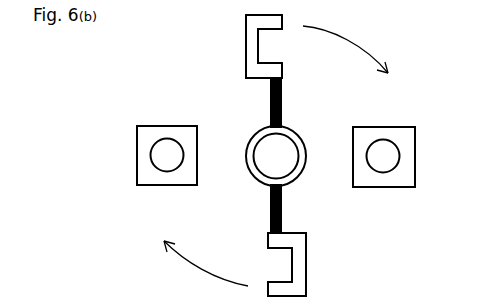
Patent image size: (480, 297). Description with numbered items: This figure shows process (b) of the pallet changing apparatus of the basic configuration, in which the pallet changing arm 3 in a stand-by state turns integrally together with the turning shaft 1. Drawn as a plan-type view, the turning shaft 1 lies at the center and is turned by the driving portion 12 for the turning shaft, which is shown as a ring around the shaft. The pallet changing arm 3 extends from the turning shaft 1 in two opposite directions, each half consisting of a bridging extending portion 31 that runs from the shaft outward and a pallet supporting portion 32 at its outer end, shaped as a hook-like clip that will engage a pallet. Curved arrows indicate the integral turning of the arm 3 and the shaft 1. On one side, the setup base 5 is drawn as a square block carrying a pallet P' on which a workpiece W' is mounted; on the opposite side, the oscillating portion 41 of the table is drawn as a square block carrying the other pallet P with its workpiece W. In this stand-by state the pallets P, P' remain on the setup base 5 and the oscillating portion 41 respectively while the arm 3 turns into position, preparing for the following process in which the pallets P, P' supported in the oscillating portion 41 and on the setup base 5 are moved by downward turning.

The turning shaft 1 is at (280, 147).
The pallet changing arm 3 is at (246, 52).
The setup base 5 is at (121, 129).
The driving portion for turning shaft 12 is at (250, 142).
The bridging extending portion 31 is at (282, 84).
The pallet supporting portion 32 is at (254, 33).
The oscillating portion of table 41 is at (428, 139).
The pallet P is at (406, 107).
The pallet P' is at (139, 89).
The workpiece W is at (390, 188).
The workpiece W' is at (171, 118).